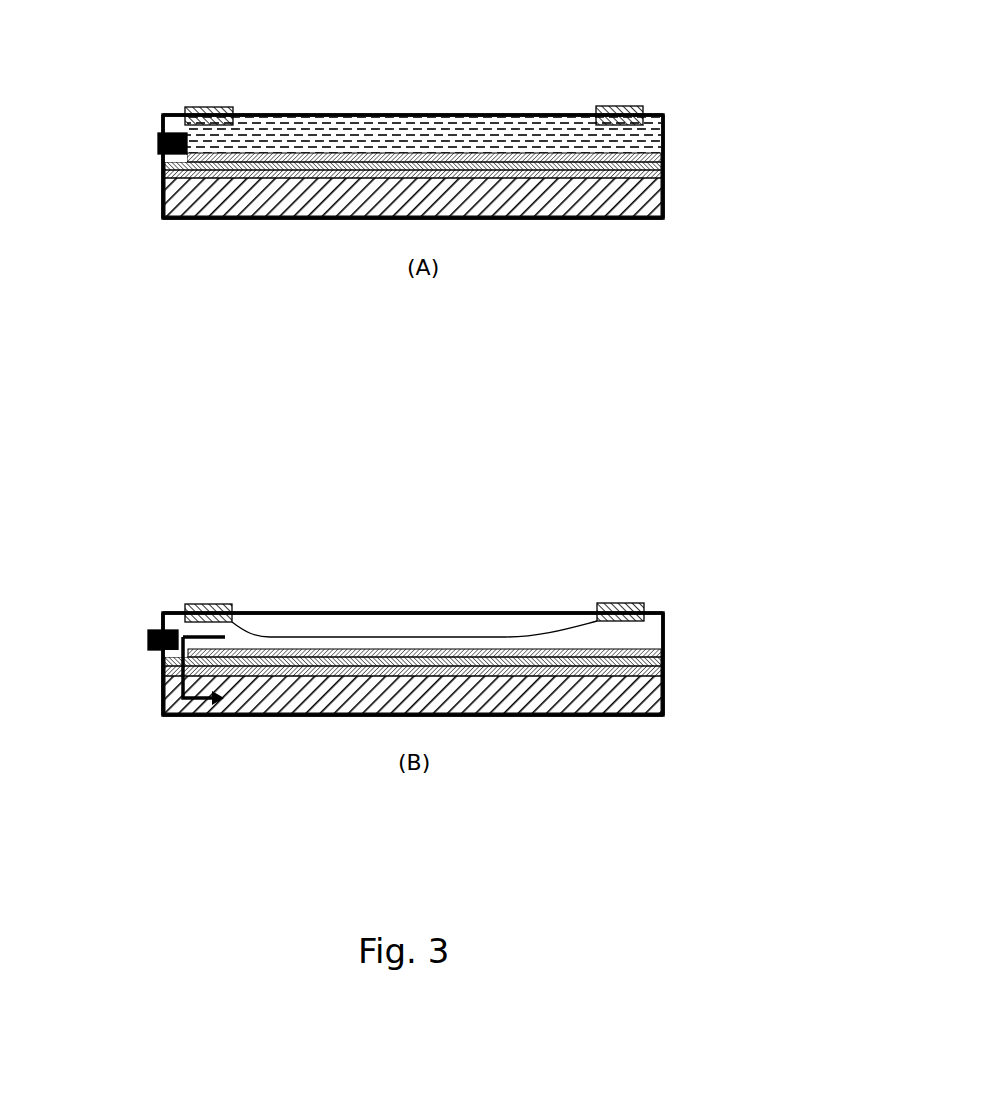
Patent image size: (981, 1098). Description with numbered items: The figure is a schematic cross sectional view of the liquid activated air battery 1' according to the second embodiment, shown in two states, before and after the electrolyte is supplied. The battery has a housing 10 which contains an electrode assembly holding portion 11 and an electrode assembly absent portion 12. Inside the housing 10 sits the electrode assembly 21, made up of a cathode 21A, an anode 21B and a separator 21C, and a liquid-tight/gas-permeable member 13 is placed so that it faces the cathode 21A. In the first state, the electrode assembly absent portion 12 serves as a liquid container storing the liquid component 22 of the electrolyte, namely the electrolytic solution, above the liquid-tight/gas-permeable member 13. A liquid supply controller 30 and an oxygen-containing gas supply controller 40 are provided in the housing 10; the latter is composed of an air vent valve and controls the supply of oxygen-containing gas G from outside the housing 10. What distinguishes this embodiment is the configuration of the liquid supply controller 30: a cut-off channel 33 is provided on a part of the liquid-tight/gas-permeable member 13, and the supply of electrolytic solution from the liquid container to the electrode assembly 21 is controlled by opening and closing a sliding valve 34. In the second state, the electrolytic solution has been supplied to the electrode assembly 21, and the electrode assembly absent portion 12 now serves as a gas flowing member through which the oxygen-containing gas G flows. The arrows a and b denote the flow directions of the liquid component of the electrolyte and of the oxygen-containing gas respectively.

The liquid activated air battery 1' is at (413, 379).
The housing 10 is at (664, 130).
The electrode assembly holding portion 11 is at (543, 220).
The electrode assembly absent portion 12 is at (664, 113).
The liquid-tight/gas-permeable member 13 is at (664, 152).
The electrode assembly 21 is at (493, 447).
The cathode 21A is at (664, 163).
The anode 21B is at (750, 172).
The separator 21C is at (664, 170).
The liquid component 22 is at (480, 128).
The liquid supply controller 30 is at (106, 411).
The cut-off channel 33 is at (160, 162).
The sliding valve 34 is at (158, 139).
The oxygen-containing gas supply controller 40 is at (213, 107).
The flow direction of liquid component a is at (163, 700).
The flow direction of oxygen-containing gas b is at (338, 636).
The oxygen-containing gas G is at (505, 630).